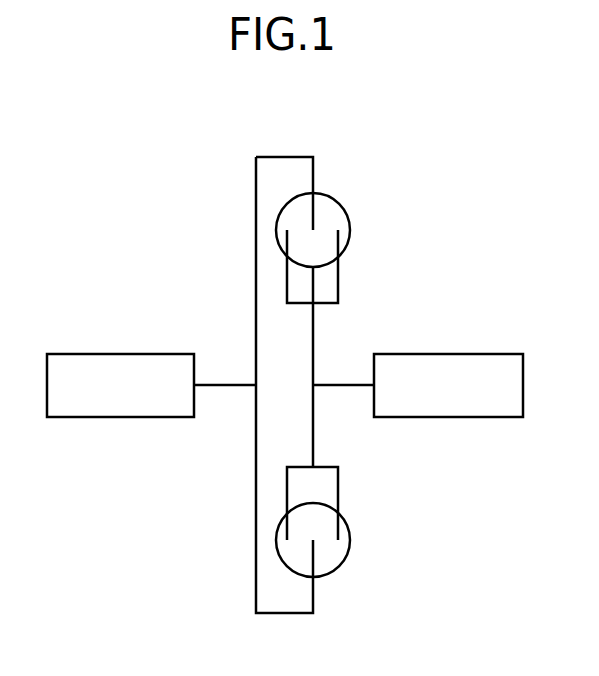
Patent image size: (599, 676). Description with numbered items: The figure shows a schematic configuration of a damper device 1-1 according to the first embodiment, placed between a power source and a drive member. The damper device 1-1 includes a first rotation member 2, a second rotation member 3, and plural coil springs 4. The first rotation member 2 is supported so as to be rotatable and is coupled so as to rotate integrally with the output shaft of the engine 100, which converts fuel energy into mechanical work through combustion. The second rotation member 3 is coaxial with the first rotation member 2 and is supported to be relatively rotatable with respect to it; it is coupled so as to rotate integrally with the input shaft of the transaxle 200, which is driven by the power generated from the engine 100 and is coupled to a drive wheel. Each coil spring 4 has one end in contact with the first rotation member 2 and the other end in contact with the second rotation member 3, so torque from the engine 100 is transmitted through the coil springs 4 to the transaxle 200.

The damper device 1-1 is at (288, 145).
The coil spring 4 is at (360, 226).
The transaxle 200 is at (125, 347).
The engine 100 is at (453, 347).
The second rotation member 3 is at (221, 383).
The first rotation member 2 is at (340, 383).